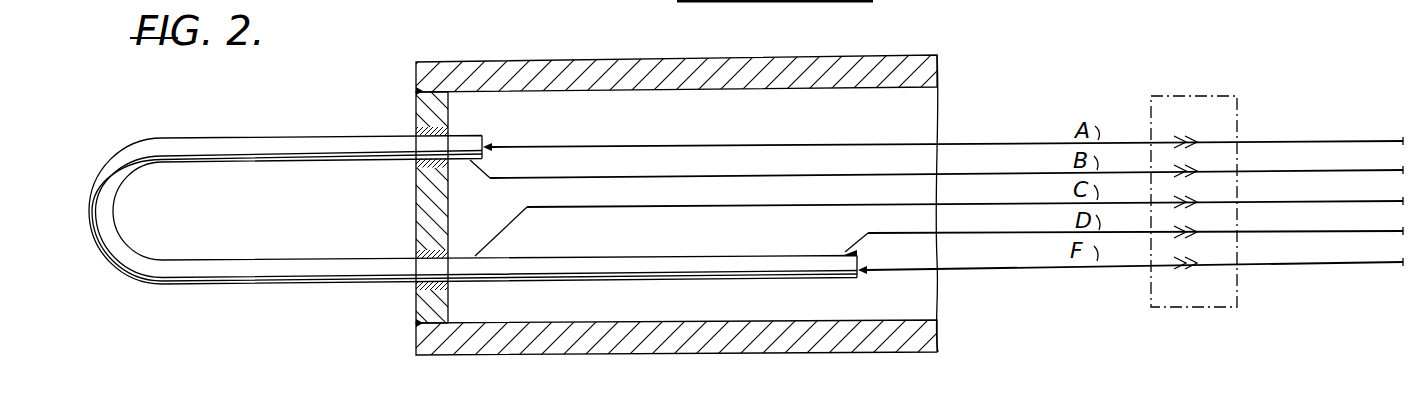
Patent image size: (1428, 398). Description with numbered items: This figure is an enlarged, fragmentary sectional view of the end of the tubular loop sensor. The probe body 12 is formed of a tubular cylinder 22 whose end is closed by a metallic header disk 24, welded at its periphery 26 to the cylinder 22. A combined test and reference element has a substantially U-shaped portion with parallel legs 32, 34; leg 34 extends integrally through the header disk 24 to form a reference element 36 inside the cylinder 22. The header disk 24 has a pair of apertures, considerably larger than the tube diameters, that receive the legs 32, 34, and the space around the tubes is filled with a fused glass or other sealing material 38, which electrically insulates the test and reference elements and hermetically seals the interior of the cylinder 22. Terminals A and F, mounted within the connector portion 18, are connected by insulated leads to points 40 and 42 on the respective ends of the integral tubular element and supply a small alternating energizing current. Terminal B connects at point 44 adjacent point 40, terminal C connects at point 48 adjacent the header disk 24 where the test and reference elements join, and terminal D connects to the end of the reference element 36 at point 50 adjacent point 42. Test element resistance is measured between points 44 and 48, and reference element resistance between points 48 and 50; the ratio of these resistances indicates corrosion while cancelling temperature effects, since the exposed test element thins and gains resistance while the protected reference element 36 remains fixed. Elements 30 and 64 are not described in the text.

The probe body 12 is at (533, 43).
The connector portion 18 is at (1153, 92).
The tubular cylinder 22 is at (622, 56).
The header disk 24 is at (418, 103).
The periphery 26 is at (414, 90).
The optical fiber 30 is at (279, 117).
The leg 32 is at (210, 112).
The leg 34 is at (264, 240).
The reference element 36 is at (596, 256).
The sealing material 38 is at (416, 128).
The point 40 is at (489, 145).
The point 42 is at (866, 264).
The point 44 is at (471, 164).
The point 48 is at (476, 256).
The point 50 is at (846, 252).
The cable 64 is at (797, 0).